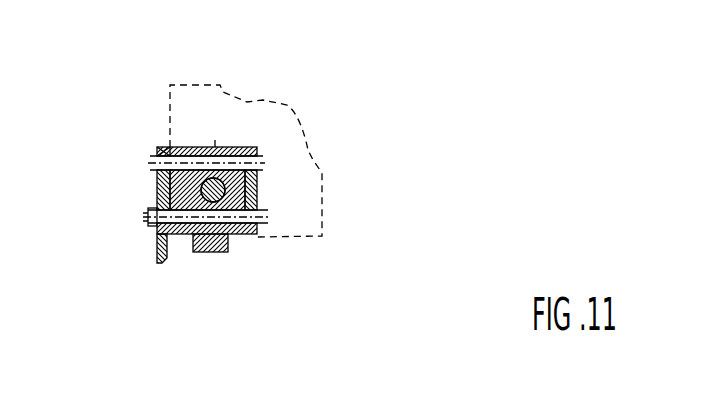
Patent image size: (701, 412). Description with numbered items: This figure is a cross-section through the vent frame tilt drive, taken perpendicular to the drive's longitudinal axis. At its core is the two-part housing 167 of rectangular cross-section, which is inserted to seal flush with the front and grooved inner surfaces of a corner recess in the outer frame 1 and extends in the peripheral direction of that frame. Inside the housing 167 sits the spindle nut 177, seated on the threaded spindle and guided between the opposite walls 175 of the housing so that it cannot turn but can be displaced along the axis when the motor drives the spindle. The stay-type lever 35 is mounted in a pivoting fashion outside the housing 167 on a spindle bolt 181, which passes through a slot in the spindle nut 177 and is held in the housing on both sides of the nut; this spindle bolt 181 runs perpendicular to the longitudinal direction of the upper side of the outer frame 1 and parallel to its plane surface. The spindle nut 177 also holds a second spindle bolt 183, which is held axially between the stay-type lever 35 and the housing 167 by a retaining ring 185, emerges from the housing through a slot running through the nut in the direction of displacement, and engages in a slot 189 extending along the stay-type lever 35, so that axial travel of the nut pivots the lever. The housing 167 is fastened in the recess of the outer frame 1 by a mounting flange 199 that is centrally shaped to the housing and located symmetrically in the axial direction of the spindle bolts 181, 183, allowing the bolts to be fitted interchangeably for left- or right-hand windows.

The outer frame 1 is at (223, 92).
The stay-type lever 35 is at (157, 192).
The housing 167 is at (257, 208).
The walls of the housing 175 is at (240, 233).
The spindle nut 177 is at (257, 183).
The spindle bolt 181 is at (183, 235).
The spindle bolt 183 is at (258, 147).
The retaining ring 185 is at (168, 147).
The slot 189 is at (157, 172).
The mounting flange 199 is at (220, 253).